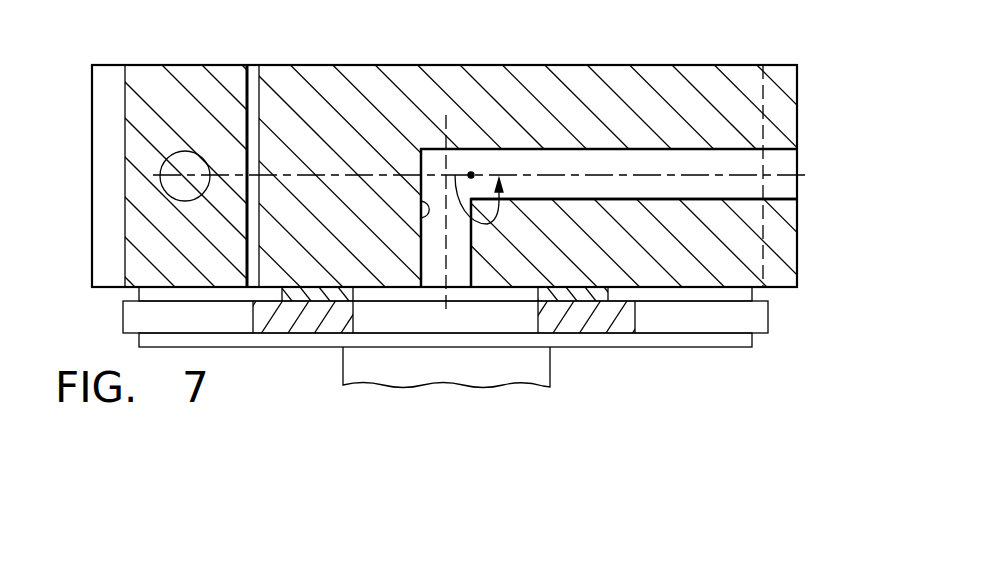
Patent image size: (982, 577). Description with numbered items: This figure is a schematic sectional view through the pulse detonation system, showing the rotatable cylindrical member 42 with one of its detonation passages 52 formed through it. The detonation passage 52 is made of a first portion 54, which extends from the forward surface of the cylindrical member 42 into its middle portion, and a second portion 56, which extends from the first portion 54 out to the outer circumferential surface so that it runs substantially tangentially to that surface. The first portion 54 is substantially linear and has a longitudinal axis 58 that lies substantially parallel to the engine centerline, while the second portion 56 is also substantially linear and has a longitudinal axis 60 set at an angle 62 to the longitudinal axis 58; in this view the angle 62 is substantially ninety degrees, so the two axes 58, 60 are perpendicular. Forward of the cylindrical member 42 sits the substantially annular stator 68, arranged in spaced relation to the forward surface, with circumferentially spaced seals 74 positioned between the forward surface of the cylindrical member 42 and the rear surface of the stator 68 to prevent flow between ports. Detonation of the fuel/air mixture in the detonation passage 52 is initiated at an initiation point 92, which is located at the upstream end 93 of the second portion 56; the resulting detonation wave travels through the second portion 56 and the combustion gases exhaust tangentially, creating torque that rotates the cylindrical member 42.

The rotatable cylindrical member 42 is at (670, 42).
The detonation passage 52 is at (529, 149).
The first portion of detonation passage 54 is at (422, 217).
The second portion of detonation passage 56 is at (781, 198).
The longitudinal axis of first portion 58 is at (446, 251).
The longitudinal axis of second portion 60 is at (786, 171).
The angle 62 is at (499, 200).
The stator 68 is at (770, 317).
The seal 74 is at (613, 294).
The initiation point 92 is at (471, 175).
The upstream end of second detonation passage portion 93 is at (470, 225).